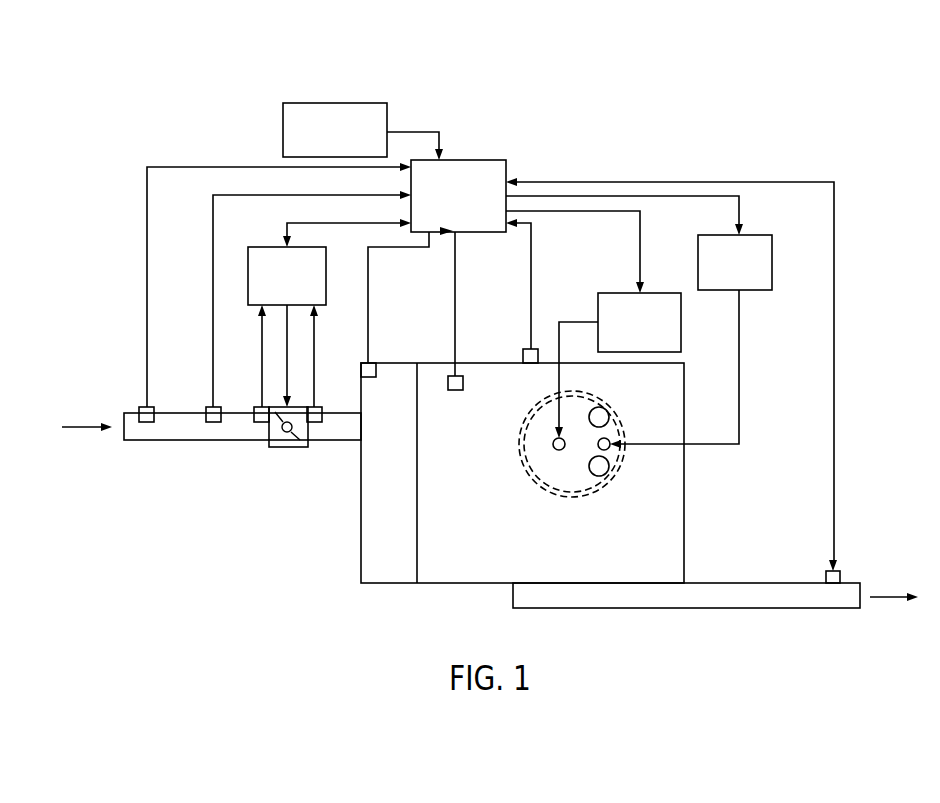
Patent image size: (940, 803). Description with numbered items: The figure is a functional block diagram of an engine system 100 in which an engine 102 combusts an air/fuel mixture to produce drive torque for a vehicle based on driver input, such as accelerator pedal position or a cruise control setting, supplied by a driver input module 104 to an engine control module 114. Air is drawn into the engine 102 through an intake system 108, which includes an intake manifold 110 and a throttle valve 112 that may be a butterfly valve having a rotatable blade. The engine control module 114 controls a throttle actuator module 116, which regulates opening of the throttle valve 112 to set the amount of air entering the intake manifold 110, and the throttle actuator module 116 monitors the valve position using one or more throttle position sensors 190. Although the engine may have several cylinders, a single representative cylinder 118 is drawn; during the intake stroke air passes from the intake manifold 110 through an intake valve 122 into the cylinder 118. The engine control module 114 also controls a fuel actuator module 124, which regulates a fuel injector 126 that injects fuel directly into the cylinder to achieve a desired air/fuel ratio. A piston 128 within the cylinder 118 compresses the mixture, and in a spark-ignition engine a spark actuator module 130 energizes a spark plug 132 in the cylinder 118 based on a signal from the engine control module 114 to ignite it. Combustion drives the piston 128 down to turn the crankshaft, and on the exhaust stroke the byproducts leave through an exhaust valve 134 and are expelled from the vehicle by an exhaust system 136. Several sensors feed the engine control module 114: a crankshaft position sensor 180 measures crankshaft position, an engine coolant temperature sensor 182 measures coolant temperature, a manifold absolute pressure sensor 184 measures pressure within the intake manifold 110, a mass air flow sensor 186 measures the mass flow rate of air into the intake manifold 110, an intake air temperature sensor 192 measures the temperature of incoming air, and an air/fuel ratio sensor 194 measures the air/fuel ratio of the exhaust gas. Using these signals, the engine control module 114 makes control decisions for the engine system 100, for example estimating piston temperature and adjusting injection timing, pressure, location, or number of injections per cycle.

The engine system 100 is at (114, 110).
The engine 102 is at (684, 417).
The driver input module 104 is at (283, 130).
The intake system 108 is at (228, 511).
The intake manifold 110 is at (361, 565).
The throttle valve 112 is at (287, 450).
The engine control module 114 is at (506, 167).
The throttle actuator module 116 is at (267, 247).
The cylinder 118 is at (540, 485).
The intake valve 122 is at (613, 410).
The fuel actuator module 124 is at (772, 262).
The fuel injector 126 is at (613, 438).
The piston 128 is at (532, 410).
The spark actuator module 130 is at (681, 335).
The spark plug 132 is at (553, 446).
The exhaust valve 134 is at (598, 480).
The exhaust system 136 is at (840, 638).
The crankshaft position sensor 180 is at (534, 349).
The engine coolant temperature sensor 182 is at (456, 390).
The manifold absolute pressure sensor 184 is at (362, 365).
The mass air flow sensor 186 is at (208, 407).
The throttle position sensors 190 is at (258, 423).
The intake air temperature sensor 192 is at (140, 409).
The air/fuel ratio sensor 194 is at (840, 578).